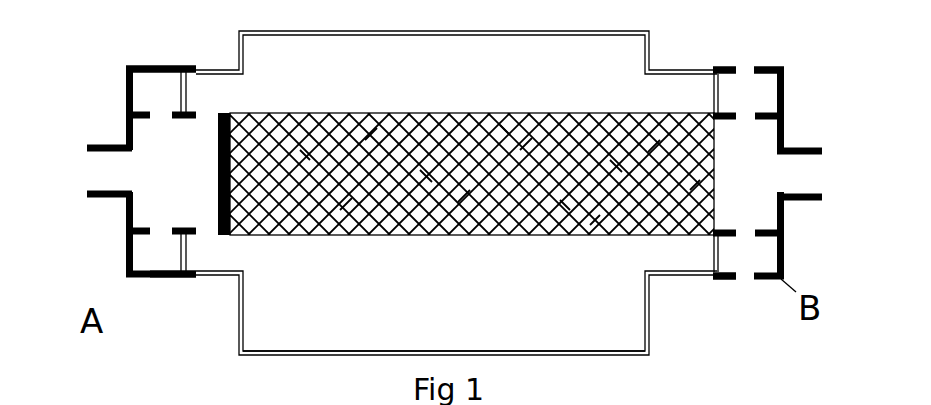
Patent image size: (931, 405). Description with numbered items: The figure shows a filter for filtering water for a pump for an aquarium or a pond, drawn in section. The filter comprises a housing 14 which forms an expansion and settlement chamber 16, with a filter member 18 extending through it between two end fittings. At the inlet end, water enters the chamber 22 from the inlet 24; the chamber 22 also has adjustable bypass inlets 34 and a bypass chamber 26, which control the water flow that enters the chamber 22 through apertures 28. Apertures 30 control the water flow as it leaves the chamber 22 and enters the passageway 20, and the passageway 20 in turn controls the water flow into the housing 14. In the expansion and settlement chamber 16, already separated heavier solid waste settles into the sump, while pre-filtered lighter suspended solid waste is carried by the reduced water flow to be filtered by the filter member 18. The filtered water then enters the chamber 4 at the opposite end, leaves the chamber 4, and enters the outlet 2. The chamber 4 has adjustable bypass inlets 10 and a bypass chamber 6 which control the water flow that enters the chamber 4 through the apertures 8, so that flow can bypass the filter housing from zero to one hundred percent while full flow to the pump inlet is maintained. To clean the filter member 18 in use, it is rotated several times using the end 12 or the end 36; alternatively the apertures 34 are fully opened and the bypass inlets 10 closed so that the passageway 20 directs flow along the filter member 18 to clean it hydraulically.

The outlet 2 is at (808, 177).
The chamber 4 is at (756, 201).
The bypass chamber 6 is at (765, 104).
The apertures 8 is at (749, 114).
The adjustable bypass inlets 10 is at (752, 68).
The end 12 is at (785, 70).
The housing 14 is at (618, 32).
The expansion and settlement chamber 16 is at (480, 311).
The filter member 18 is at (511, 113).
The passageway 20 is at (235, 95).
The chamber 22 is at (187, 191).
The inlet 24 is at (98, 173).
The bypass chamber 26 is at (140, 95).
The apertures 28 is at (167, 113).
The apertures 30 is at (206, 112).
The adjustable bypass inlets 34 is at (160, 66).
The end 36 is at (125, 68).